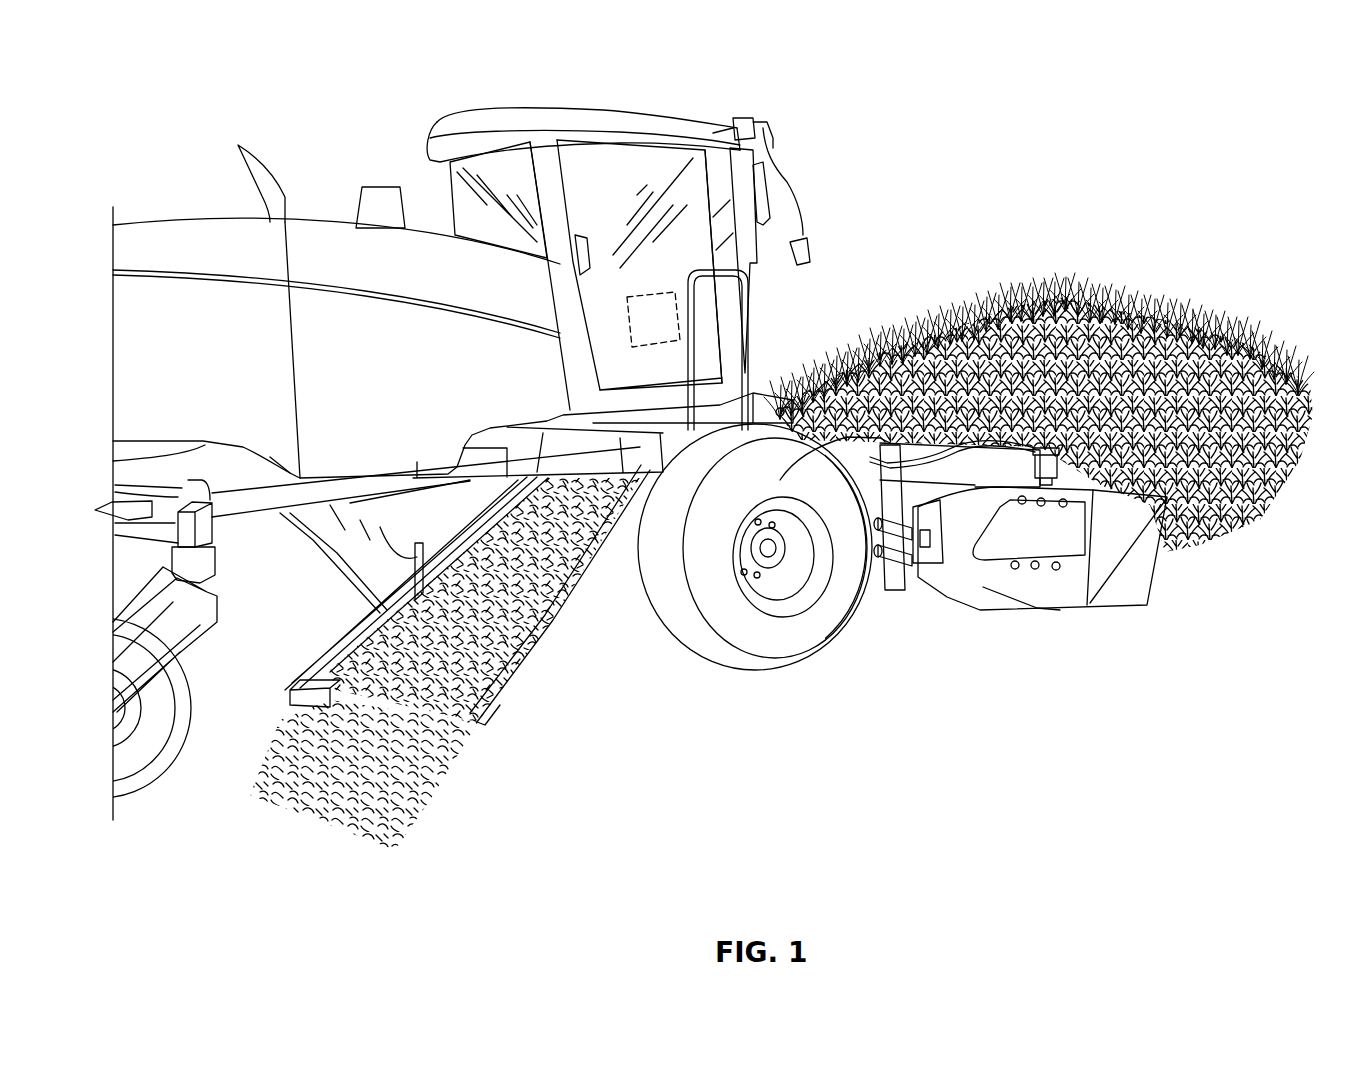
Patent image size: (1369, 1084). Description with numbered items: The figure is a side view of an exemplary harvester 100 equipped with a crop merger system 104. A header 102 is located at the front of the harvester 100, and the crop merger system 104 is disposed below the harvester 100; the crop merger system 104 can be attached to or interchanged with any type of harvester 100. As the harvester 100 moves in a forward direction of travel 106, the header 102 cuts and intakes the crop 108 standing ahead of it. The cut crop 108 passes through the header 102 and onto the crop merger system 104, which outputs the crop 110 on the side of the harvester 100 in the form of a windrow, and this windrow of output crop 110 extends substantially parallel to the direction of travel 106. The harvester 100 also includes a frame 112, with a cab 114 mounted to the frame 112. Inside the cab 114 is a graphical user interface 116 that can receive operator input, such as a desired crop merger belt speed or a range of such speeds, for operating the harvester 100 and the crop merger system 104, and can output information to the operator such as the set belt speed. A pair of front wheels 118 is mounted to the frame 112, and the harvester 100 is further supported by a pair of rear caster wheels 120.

The harvester 100 is at (1140, 96).
The header 102 is at (1040, 615).
The crop merger system 104 is at (493, 720).
The direction of travel 106 is at (518, 69).
The crop 108 is at (1057, 274).
The output crop 110 is at (394, 817).
The frame 112 is at (302, 530).
The cab 114 is at (617, 114).
The graphical user interface 116 is at (647, 290).
The front wheels 118 is at (780, 670).
The rear caster wheels 120 is at (143, 793).